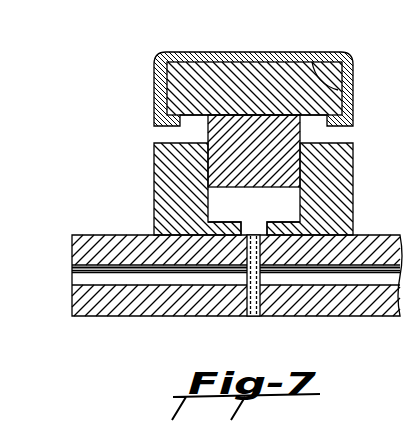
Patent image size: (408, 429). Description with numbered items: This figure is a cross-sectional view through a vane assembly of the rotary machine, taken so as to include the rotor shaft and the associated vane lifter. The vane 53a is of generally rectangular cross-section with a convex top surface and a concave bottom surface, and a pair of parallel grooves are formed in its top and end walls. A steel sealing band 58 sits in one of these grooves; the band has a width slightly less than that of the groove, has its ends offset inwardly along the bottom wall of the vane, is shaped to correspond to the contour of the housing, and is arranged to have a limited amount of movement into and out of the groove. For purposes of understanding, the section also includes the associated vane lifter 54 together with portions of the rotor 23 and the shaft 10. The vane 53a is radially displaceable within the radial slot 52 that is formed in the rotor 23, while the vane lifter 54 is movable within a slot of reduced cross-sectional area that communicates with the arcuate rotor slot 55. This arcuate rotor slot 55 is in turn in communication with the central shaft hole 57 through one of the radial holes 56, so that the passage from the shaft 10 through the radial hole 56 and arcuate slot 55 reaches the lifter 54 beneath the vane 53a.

The shaft 10 is at (85, 235).
The rotor 23 is at (350, 200).
The radial slot 52 is at (158, 132).
The vane 53a is at (267, 77).
The vane lifter 54 is at (297, 163).
The arcuate rotor slot 55 is at (220, 200).
The radial hole 56 is at (257, 292).
The central shaft hole 57 is at (78, 280).
The sealing band 58 is at (190, 52).